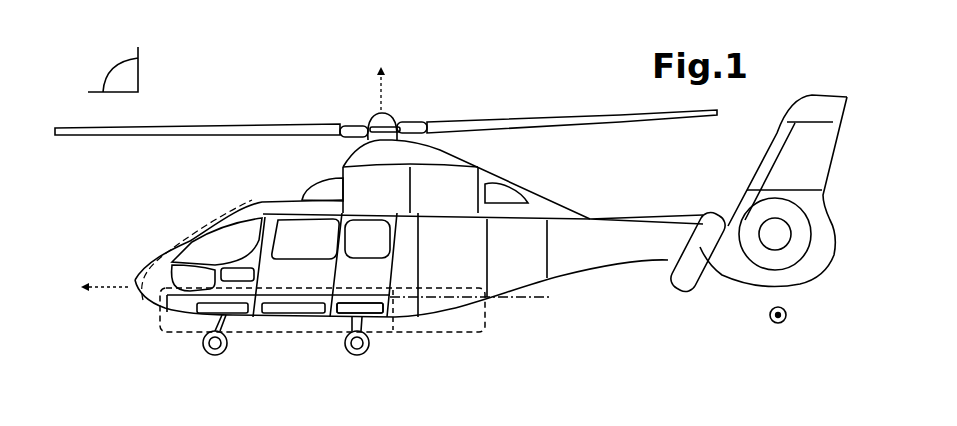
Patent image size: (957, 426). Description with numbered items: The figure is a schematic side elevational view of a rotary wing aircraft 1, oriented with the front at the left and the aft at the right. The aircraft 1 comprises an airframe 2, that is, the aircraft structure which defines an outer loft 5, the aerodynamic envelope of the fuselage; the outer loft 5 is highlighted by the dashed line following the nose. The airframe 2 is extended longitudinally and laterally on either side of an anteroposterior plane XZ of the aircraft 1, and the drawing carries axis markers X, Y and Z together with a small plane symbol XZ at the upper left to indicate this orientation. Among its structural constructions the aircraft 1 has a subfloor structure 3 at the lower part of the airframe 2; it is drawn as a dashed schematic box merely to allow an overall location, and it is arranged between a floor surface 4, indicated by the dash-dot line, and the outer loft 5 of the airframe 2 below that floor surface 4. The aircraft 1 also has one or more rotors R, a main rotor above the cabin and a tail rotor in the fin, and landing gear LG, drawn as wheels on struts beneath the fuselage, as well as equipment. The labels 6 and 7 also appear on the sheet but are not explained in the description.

The rotary wing aircraft 1 is at (520, 95).
The airframe 2 is at (565, 267).
The subfloor structure 3 is at (252, 335).
The floor surface 4 is at (433, 304).
The outer loft 5 is at (200, 222).
The lower fuselage hatch 6 is at (372, 318).
The sheet numeral 7 is at (695, 415).
The rotor R is at (265, 124).
The landing gear LG is at (200, 343).
The longitudinal axis X is at (94, 272).
The transverse axis Y is at (768, 313).
The vertical axis Z is at (380, 71).
The anteroposterior plane XZ is at (105, 90).